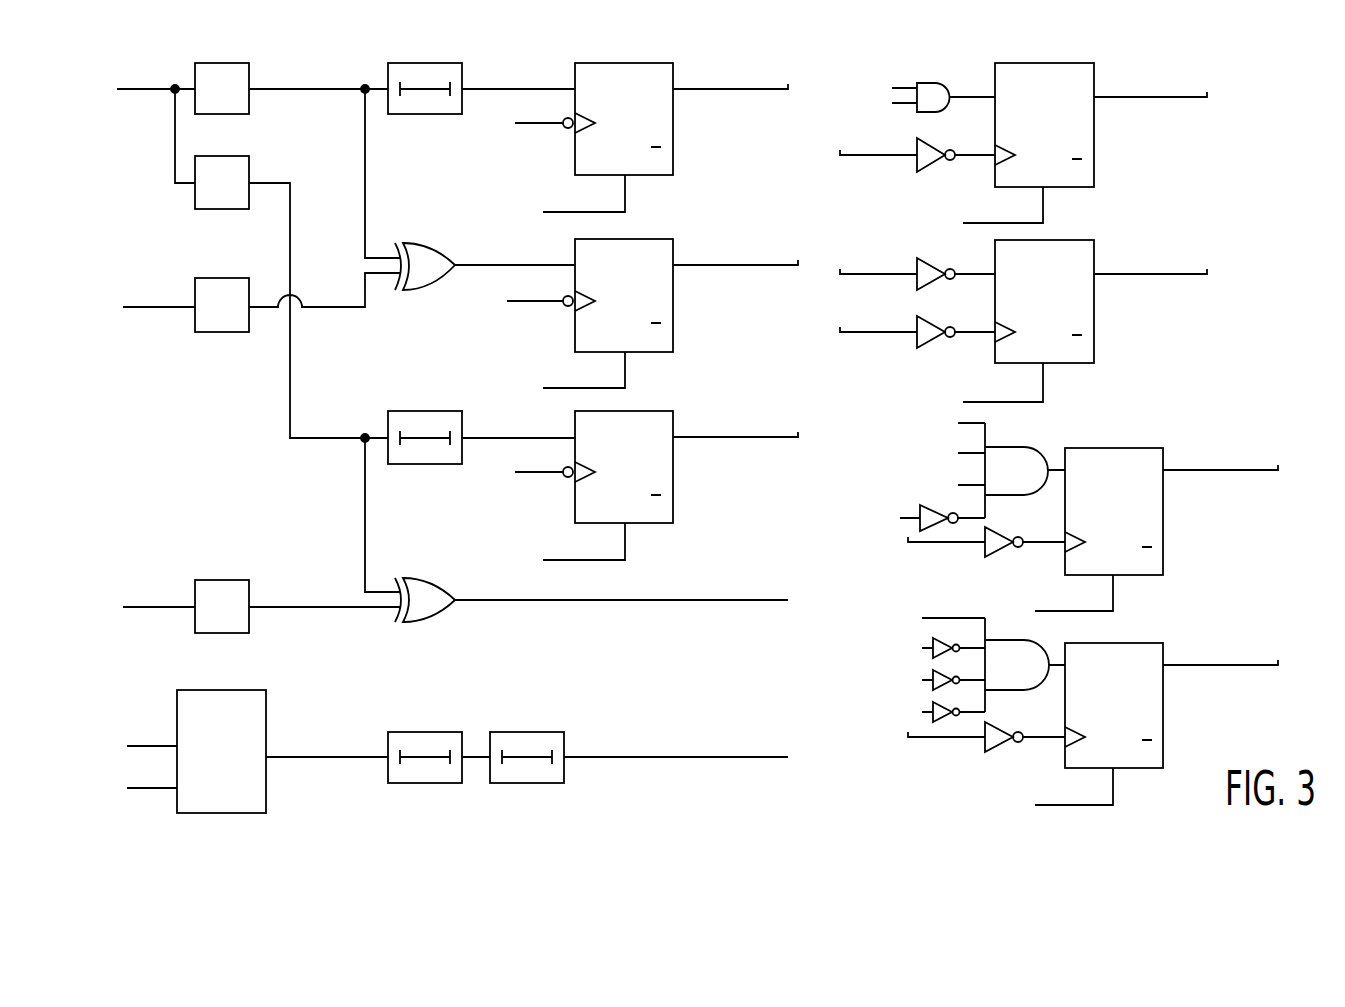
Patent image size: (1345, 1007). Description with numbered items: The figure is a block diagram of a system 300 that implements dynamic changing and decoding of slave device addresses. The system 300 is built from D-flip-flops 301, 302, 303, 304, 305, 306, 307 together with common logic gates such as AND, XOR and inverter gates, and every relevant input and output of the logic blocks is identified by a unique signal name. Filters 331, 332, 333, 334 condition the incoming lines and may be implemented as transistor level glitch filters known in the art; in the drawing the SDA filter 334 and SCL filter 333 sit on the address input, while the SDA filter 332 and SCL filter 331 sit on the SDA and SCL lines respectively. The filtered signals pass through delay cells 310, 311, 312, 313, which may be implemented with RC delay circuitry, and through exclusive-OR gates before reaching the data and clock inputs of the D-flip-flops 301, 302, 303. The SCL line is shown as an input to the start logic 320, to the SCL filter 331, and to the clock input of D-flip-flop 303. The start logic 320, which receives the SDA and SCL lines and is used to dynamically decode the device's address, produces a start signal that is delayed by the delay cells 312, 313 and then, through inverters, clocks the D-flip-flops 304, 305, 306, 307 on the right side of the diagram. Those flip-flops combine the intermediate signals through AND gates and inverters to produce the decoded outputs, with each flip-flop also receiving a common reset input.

The system 300 is at (1283, 158).
The D-flip-flop 301 is at (673, 130).
The D-flip-flop 302 is at (673, 308).
The D-flip-flop 303 is at (673, 478).
The D-flip-flop 304 is at (1094, 140).
The D-flip-flop 305 is at (1094, 322).
The D-flip-flop 306 is at (1163, 528).
The D-flip-flop 307 is at (1163, 722).
The delay cell 310 is at (458, 114).
The delay cell 311 is at (414, 411).
The delay cell 312 is at (415, 732).
The delay cell 313 is at (517, 732).
The start logic 320 is at (267, 715).
The SCL filter 331 is at (238, 580).
The SDA filter 332 is at (193, 324).
The SCL filter 333 is at (195, 195).
The SDA filter 334 is at (249, 103).